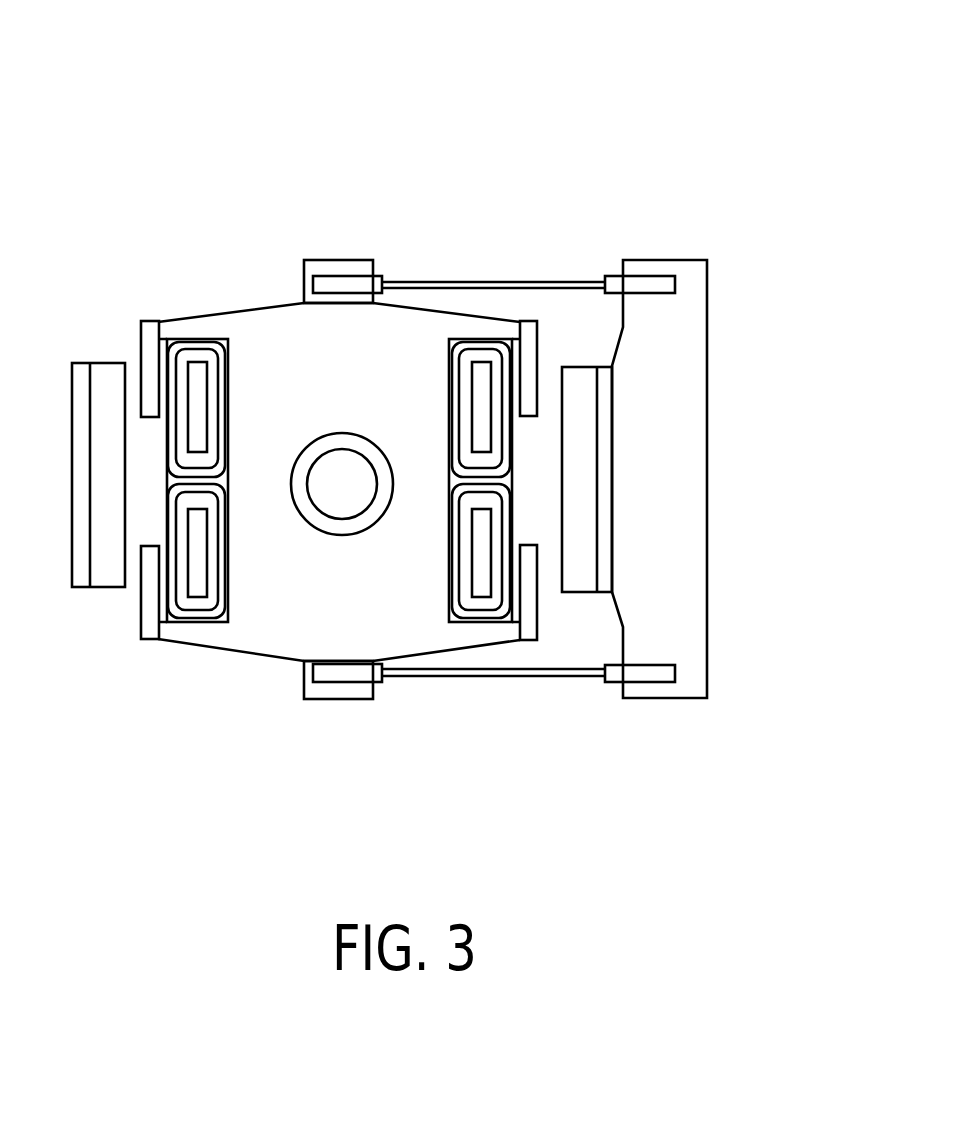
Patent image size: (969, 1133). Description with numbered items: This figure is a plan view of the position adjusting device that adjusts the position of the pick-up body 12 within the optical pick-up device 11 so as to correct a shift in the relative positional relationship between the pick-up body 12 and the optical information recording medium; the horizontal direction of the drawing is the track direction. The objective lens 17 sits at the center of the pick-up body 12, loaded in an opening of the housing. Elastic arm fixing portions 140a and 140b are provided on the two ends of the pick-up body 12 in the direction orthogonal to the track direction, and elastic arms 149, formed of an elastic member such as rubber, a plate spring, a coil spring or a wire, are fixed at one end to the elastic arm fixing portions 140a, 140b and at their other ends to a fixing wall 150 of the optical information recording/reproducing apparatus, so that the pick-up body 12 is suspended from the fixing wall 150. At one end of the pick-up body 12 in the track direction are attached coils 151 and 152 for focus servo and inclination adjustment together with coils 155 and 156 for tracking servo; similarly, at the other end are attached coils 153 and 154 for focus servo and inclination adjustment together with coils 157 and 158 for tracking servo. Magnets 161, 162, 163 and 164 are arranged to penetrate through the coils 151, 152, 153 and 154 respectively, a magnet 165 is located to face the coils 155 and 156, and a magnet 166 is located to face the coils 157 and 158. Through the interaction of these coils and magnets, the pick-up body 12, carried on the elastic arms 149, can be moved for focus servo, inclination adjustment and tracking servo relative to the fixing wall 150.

The optical pick-up device 11 is at (492, 128).
The pick-up body 12 is at (270, 637).
The objective lens 17 is at (322, 467).
The elastic arm fixing portion 140a is at (343, 265).
The elastic arm fixing portion 140b is at (343, 690).
The elastic arm 149 is at (560, 283).
The fixing wall 150 is at (677, 380).
The coil for focus servo and inclination adjustment 151 is at (210, 343).
The coil for focus servo and inclination adjustment 152 is at (178, 615).
The coil for focus servo and inclination adjustment 153 is at (463, 337).
The coil for focus servo and inclination adjustment 154 is at (462, 613).
The coil for tracking servo 155 is at (148, 321).
The coil for tracking servo 156 is at (145, 627).
The coil for tracking servo 157 is at (530, 357).
The coil for tracking servo 158 is at (530, 622).
The magnet 161 is at (197, 367).
The magnet 162 is at (198, 592).
The magnet 163 is at (483, 370).
The magnet 164 is at (483, 583).
The magnet 165 is at (108, 362).
The magnet 166 is at (582, 540).